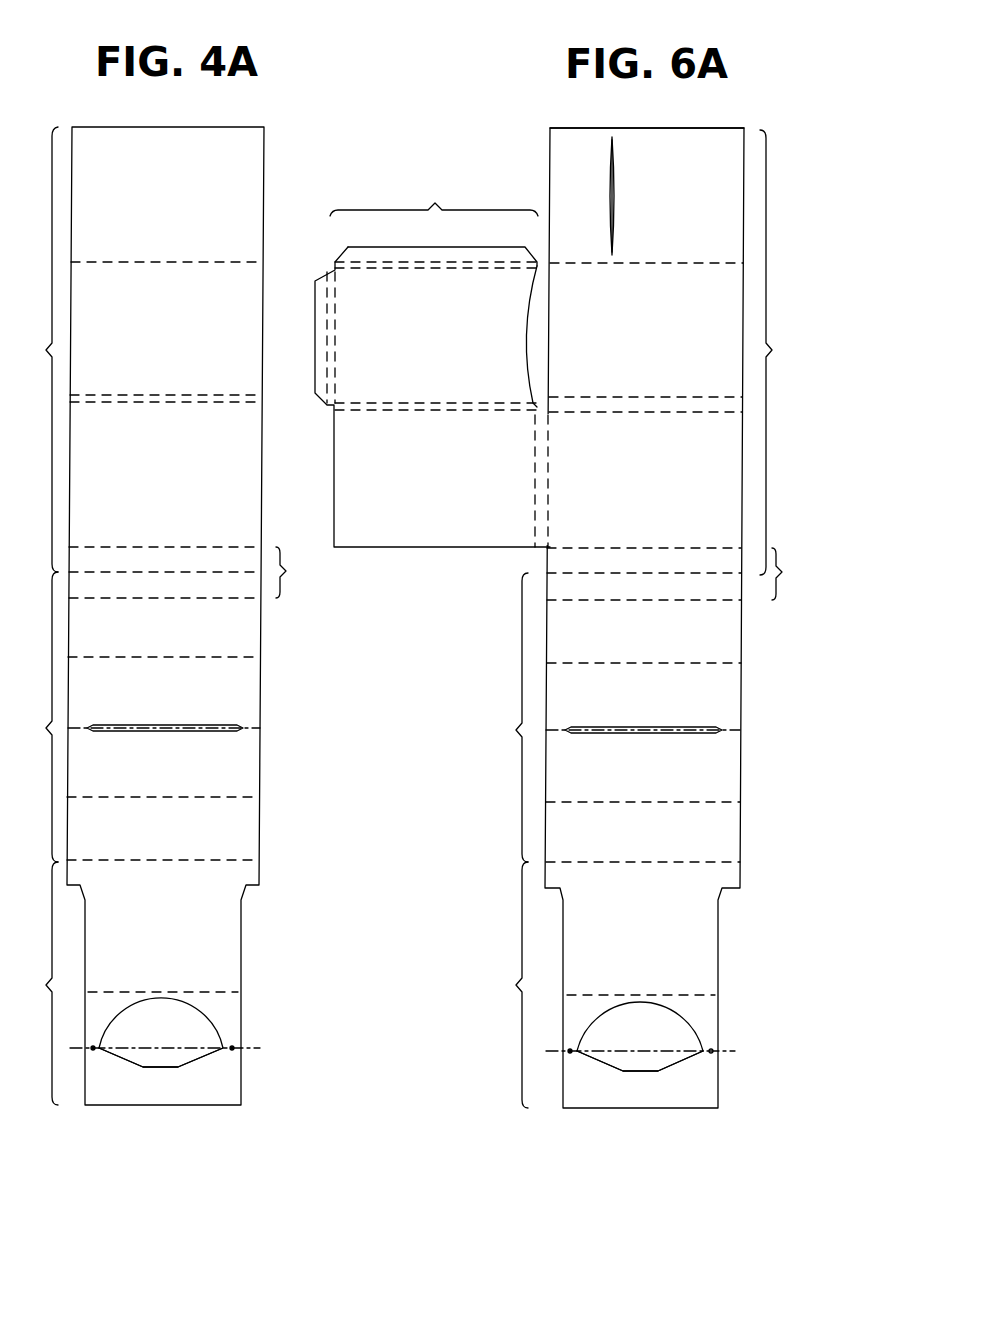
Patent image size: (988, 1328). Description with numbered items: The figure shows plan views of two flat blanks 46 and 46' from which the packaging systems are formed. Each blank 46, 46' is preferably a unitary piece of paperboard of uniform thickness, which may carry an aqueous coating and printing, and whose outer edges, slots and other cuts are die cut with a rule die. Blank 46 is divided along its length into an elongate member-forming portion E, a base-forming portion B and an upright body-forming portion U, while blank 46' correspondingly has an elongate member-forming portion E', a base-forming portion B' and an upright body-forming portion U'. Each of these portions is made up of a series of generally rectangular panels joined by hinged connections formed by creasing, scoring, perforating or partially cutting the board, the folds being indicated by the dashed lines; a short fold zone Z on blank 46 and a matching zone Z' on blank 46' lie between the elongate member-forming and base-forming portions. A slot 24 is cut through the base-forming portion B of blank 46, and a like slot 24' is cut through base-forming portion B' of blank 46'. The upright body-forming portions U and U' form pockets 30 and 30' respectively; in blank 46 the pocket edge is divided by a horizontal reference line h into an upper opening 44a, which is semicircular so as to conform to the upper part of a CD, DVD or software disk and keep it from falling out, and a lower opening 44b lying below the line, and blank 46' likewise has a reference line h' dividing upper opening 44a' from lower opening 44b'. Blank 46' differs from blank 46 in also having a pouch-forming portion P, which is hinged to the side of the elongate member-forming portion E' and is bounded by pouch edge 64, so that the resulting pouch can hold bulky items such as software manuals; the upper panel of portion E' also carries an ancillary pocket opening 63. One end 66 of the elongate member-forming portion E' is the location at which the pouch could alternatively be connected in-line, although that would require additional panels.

In FIG. 4A, the blank 46 is at (222, 573).
In FIG. 6A, the blank 46' is at (727, 597).
In FIG. 4A, the slot 24 is at (164, 705).
In FIG. 6A, the slot 24' is at (643, 706).
In FIG. 4A, the upper opening 44a is at (207, 1015).
In FIG. 6A, the upper opening 44a' is at (684, 1009).
In FIG. 4A, the lower opening 44b is at (203, 1075).
In FIG. 6A, the lower opening 44b' is at (658, 1109).
In FIG. 4A, the pocket 30 is at (161, 1116).
In FIG. 6A, the pocket 30' is at (630, 1124).
In FIG. 6A, the ancillary pocket opening 63 is at (616, 197).
In FIG. 6A, the pouch edge 64 is at (527, 327).
In FIG. 6A, the end of elongate member forming portion 66 is at (567, 128).
In FIG. 4A, the horizontal reference line h is at (177, 1049).
In FIG. 6A, the horizontal reference line h' is at (653, 1052).
In FIG. 4A, the elongate member-forming portion E is at (37, 349).
In FIG. 6A, the elongate member-forming portion E' is at (780, 352).
In FIG. 4A, the base-forming portion B is at (37, 717).
In FIG. 6A, the base-forming portion B' is at (505, 717).
In FIG. 4A, the upright body-forming portion U is at (37, 983).
In FIG. 6A, the upright body-forming portion U' is at (504, 985).
In FIG. 4A, the fold zone Z is at (292, 572).
In FIG. 6A, the fold zone Z' is at (792, 574).
In FIG. 6A, the pouch-forming portion P is at (432, 360).